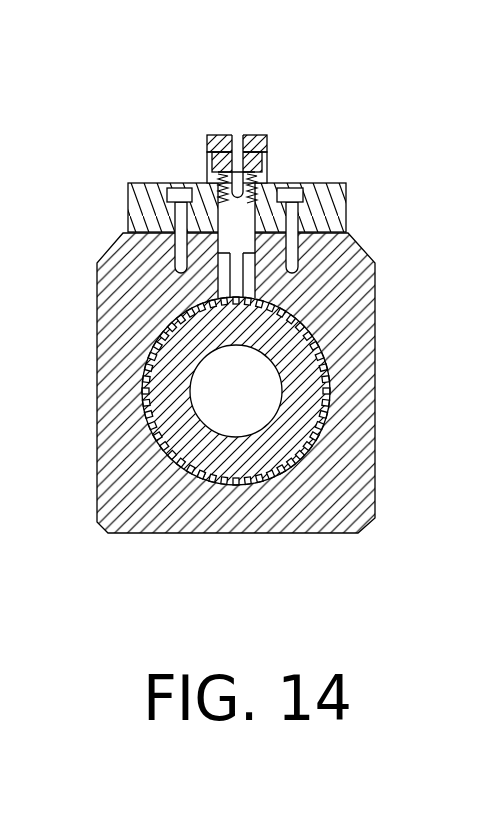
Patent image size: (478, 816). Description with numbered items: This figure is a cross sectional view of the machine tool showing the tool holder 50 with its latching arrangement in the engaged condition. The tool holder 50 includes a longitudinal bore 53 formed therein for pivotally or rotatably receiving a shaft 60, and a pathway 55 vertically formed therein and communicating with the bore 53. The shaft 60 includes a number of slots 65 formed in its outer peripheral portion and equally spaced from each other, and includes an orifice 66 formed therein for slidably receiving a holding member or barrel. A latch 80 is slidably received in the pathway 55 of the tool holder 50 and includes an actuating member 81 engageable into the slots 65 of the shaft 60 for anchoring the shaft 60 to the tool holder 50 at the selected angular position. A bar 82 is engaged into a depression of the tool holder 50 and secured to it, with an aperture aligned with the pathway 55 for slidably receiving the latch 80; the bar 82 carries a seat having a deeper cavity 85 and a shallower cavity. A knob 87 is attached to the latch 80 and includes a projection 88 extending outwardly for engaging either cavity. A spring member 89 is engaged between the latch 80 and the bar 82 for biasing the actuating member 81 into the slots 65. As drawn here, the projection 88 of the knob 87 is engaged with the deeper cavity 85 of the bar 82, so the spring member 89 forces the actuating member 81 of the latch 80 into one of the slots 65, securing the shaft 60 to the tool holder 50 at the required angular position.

The tool holder 50 is at (120, 475).
The longitudinal bore 53 is at (207, 473).
The pathway 55 is at (216, 268).
The shaft 60 is at (292, 436).
The slots 65 is at (305, 335).
The orifice 66 is at (248, 410).
The latch 80 is at (273, 127).
The actuating member 81 is at (237, 275).
The bar 82 is at (337, 202).
The deeper cavity 85 is at (263, 160).
The knob 87 is at (266, 172).
The projection 88 is at (250, 135).
The spring member 89 is at (228, 240).